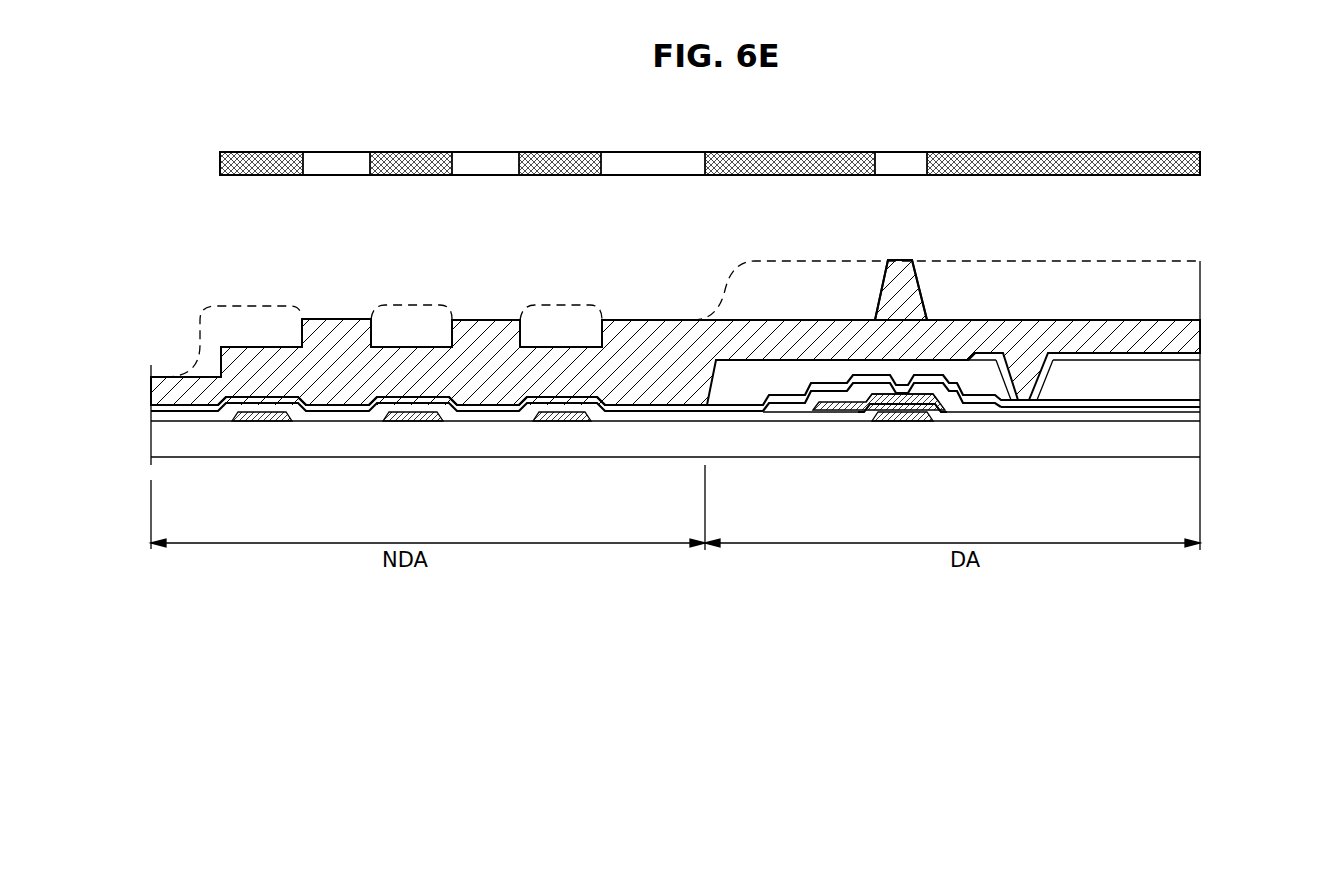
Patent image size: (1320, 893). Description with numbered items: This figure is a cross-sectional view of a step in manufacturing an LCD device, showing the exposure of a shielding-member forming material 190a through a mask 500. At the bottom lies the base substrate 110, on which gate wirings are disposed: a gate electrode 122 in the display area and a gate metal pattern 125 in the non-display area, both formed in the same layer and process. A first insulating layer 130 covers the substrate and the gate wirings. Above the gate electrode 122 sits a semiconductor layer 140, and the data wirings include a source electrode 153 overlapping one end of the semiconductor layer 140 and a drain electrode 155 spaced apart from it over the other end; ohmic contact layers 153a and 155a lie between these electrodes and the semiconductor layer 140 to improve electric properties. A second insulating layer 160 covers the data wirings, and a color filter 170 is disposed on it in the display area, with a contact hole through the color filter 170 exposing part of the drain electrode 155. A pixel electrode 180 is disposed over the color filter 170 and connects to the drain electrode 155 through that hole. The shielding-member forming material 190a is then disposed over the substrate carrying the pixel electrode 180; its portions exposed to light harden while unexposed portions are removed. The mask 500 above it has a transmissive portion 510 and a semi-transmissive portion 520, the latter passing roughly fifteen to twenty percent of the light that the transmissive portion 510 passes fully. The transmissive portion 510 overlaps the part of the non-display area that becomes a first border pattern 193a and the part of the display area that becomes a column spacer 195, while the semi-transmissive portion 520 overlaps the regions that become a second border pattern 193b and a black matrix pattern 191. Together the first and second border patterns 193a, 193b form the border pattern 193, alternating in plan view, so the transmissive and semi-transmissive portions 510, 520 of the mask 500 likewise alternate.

The base substrate 110 is at (1187, 438).
The first insulating layer 130 is at (1187, 419).
The gate electrode 122 is at (903, 416).
The gate metal pattern 125 is at (258, 418).
The semiconductor layer 140 is at (833, 411).
The source electrode 153 is at (790, 408).
The ohmic contact layer 153a is at (843, 400).
The drain electrode 155 is at (1003, 408).
The ohmic contact layer 155a is at (963, 403).
The second insulating layer 160 is at (1185, 399).
The color filter 170 is at (1185, 377).
The pixel electrode 180 is at (1185, 353).
The shielding-member forming material 190a is at (1180, 290).
The black matrix pattern 191 is at (792, 330).
The border pattern 193 is at (265, 250).
The first border pattern 193a is at (337, 330).
The second border pattern 193b is at (258, 355).
The column spacer 195 is at (900, 280).
The mask 500 is at (1200, 160).
The transmissive portion 510 is at (336, 163).
The semi-transmissive portion 520 is at (260, 163).